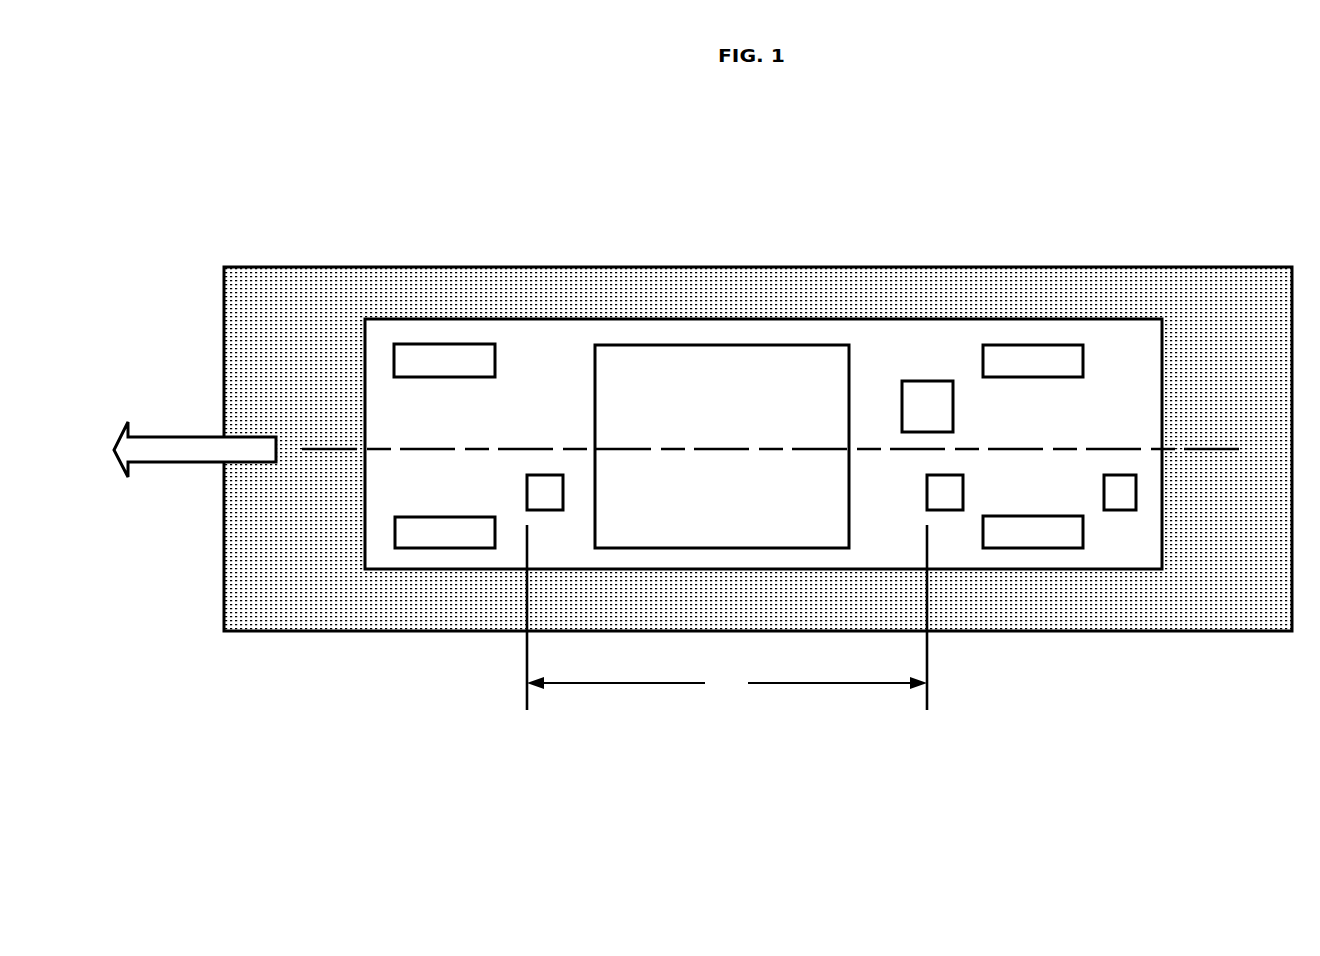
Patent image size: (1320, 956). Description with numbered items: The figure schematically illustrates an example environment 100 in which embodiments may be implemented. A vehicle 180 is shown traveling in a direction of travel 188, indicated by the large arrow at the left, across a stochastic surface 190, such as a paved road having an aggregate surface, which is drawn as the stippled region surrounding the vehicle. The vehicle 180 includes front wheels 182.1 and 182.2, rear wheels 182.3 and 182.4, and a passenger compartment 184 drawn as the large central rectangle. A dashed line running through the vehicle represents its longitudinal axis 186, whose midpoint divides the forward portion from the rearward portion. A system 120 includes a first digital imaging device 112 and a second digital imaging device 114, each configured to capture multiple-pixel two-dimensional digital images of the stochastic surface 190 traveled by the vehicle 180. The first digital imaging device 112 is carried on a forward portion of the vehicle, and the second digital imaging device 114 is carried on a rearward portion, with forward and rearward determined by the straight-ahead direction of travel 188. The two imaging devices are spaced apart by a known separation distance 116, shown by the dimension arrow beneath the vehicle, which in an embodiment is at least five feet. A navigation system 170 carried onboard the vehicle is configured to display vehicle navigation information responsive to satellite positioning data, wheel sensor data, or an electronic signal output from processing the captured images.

The environment 100 is at (222, 109).
The first digital imaging device 112 is at (543, 474).
The second digital imaging device 114 is at (945, 510).
The known separation distance 116 is at (727, 617).
The system 120 is at (928, 381).
The navigation system 170 is at (1120, 510).
The vehicle 180 is at (628, 318).
The front wheel 182.1 is at (450, 344).
The front wheel 182.2 is at (443, 548).
The rear wheel 182.3 is at (1048, 344).
The rear wheel 182.4 is at (1063, 549).
The passenger compartment 184 is at (736, 345).
The longitudinal axis 186 is at (1213, 449).
The direction of travel 188 is at (175, 437).
The stochastic surface 190 is at (1243, 266).